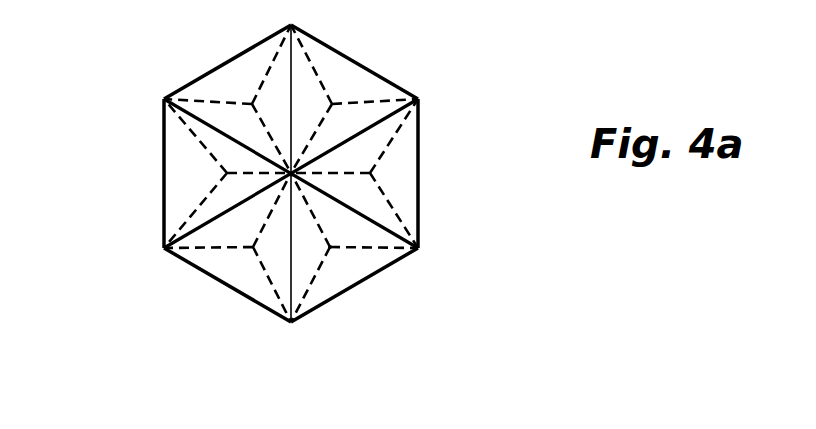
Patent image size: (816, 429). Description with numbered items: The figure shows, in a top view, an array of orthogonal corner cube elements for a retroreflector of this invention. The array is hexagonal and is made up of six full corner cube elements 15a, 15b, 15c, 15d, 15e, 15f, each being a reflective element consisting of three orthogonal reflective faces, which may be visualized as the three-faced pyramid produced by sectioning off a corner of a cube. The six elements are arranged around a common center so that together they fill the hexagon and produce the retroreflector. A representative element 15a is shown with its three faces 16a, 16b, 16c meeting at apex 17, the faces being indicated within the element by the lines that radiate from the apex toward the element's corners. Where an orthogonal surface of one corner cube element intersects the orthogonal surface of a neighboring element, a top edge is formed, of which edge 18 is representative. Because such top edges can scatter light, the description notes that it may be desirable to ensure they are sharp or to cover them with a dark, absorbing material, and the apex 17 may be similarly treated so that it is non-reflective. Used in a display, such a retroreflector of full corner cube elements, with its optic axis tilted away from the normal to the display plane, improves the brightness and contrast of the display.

The corner cube element 15a is at (367, 283).
The corner cube element 15b is at (418, 170).
The corner cube element 15c is at (353, 62).
The corner cube element 15d is at (232, 62).
The corner cube element 15e is at (164, 168).
The corner cube element 15f is at (220, 285).
The face 16a is at (377, 263).
The face 16b is at (362, 233).
The face 16c is at (305, 263).
The apex 17 is at (328, 248).
The edge 18 is at (287, 293).